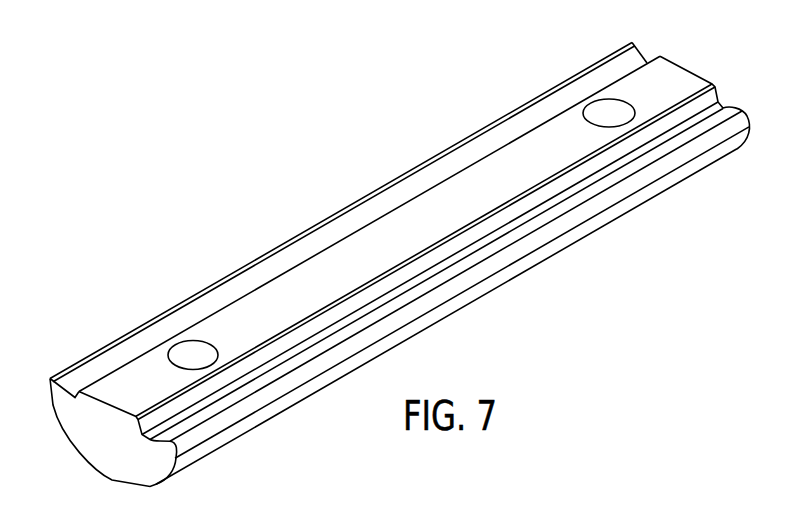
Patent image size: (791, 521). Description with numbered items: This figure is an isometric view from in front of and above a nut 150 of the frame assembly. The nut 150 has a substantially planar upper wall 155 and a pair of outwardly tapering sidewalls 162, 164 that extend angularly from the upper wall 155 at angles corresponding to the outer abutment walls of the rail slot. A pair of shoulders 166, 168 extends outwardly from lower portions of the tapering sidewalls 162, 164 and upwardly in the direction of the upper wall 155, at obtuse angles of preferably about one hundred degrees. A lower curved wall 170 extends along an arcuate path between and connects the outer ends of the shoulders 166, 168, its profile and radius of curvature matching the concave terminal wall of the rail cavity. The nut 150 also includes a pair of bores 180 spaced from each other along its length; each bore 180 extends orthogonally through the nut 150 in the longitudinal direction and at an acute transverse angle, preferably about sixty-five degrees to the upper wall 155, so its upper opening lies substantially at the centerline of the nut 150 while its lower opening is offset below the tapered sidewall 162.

The nut 150 is at (626, 257).
The upper wall 155 is at (348, 254).
The tapering sidewall 162 is at (332, 320).
The tapering sidewall 164 is at (75, 397).
The shoulder 166 is at (470, 258).
The shoulder 168 is at (128, 352).
The lower curved wall 170 is at (82, 462).
The bore 180 is at (196, 352).